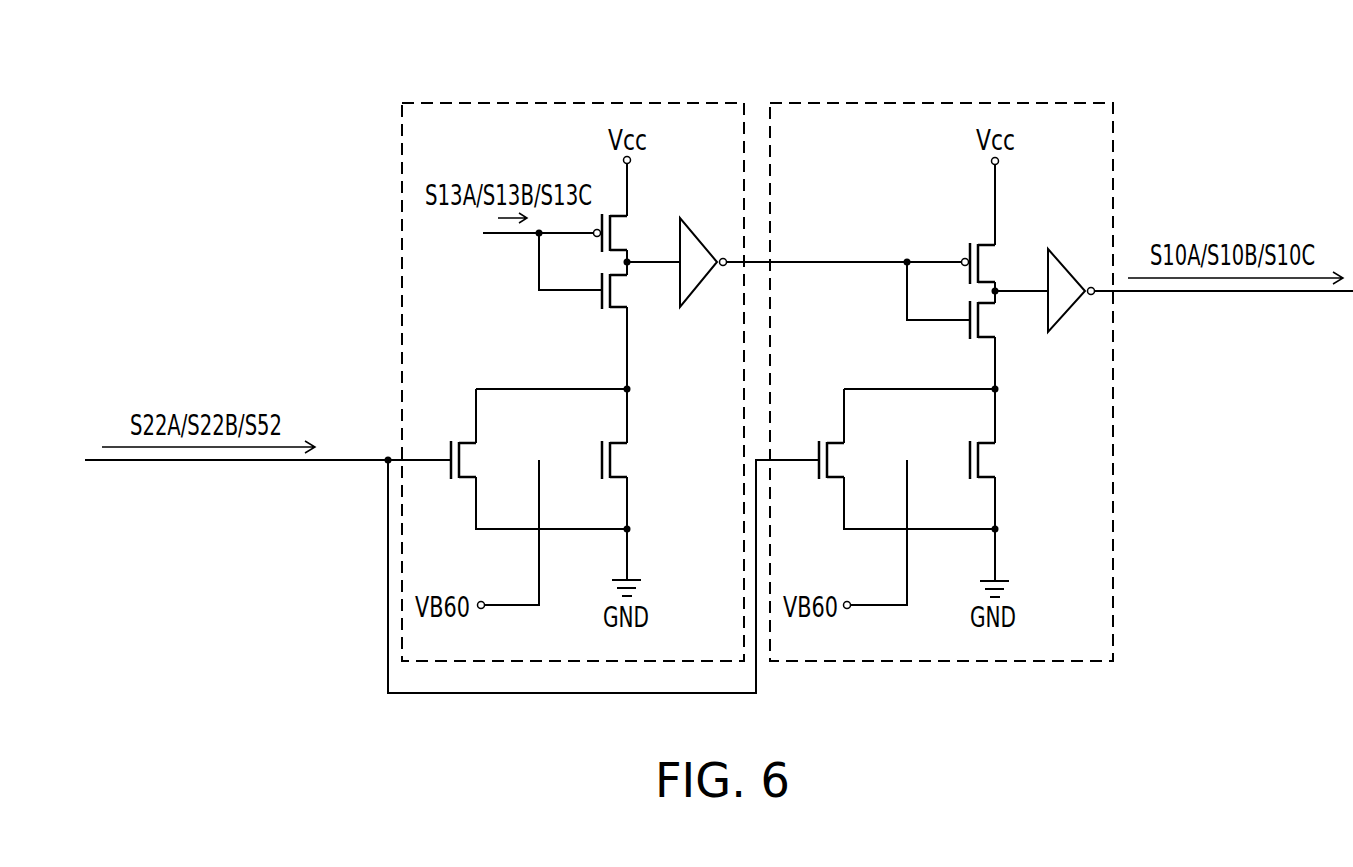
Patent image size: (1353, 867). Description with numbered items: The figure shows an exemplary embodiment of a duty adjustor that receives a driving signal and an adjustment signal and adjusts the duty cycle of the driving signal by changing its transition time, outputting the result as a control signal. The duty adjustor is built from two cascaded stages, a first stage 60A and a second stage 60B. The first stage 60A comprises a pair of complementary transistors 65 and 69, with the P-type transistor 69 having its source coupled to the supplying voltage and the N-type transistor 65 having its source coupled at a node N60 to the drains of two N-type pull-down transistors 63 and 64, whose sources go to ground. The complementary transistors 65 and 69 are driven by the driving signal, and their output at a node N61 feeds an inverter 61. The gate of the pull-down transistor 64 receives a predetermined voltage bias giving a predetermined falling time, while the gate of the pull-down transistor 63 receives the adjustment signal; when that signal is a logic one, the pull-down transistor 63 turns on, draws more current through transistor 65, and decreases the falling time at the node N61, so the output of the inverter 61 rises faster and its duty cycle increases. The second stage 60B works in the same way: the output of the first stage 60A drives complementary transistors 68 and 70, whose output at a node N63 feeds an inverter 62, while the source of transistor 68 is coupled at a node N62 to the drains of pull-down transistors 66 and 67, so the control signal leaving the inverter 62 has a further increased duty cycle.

The first stage 60A is at (571, 102).
The second stage 60B is at (940, 102).
The inverter 61 is at (703, 245).
The inverter 62 is at (1069, 272).
The pull-down transistor 63 is at (472, 461).
The pull-down transistor 64 is at (620, 461).
The complementary transistor 65 is at (620, 292).
The pull-down transistor 66 is at (840, 461).
The pull-down transistor 67 is at (990, 461).
The complementary transistor 68 is at (988, 321).
The complementary transistor 69 is at (620, 236).
The complementary transistor 70 is at (988, 264).
The node N60 is at (632, 389).
The node N61 is at (622, 262).
The node N62 is at (1000, 389).
The node N63 is at (990, 291).